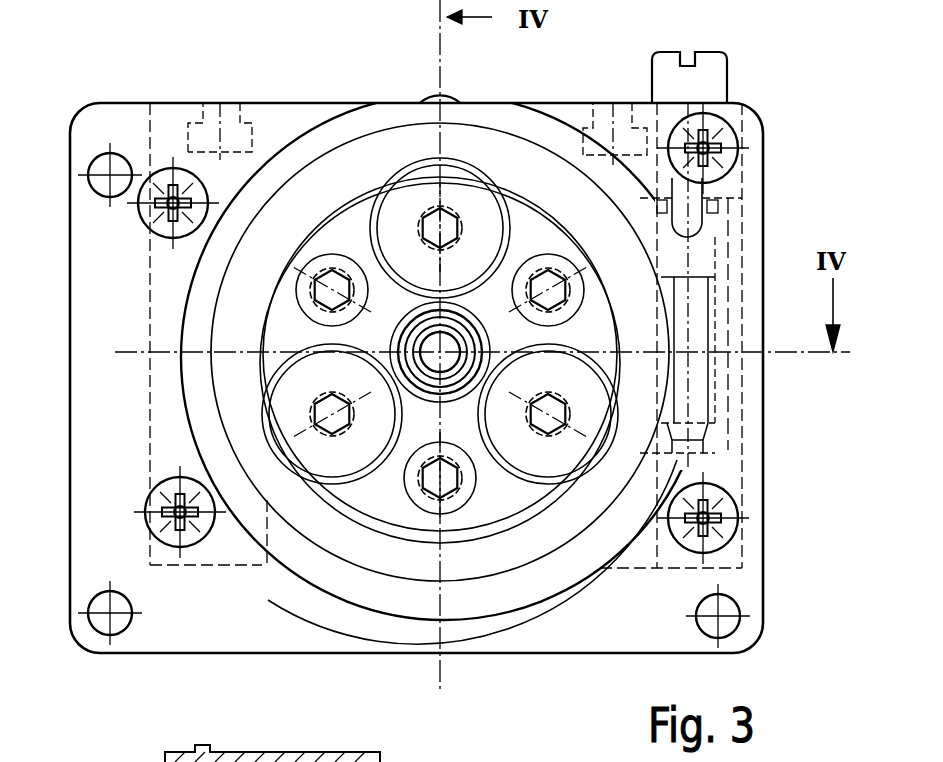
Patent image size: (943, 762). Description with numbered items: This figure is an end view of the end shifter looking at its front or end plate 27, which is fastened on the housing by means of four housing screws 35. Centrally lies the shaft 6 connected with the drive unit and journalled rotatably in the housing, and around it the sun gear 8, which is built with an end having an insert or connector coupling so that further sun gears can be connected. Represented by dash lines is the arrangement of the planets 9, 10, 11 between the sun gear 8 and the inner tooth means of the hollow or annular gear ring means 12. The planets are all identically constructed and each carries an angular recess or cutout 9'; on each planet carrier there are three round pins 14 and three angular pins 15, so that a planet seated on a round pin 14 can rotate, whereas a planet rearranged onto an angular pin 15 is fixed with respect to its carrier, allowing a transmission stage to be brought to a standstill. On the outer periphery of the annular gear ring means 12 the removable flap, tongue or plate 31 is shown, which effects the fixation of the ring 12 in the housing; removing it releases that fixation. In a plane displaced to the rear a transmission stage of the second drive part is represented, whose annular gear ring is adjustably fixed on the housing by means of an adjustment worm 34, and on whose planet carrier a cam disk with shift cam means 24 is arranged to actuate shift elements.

The shaft 6 is at (443, 397).
The sun gear 8 is at (556, 332).
The planet 9 is at (440, 321).
The angular recess 9' is at (433, 323).
The planet 10 is at (312, 495).
The planet 11 is at (592, 520).
The annular gear ring means 12 is at (318, 168).
The round pin 14 is at (390, 223).
The angular pin 15 is at (300, 263).
The shift cam means 24 is at (432, 101).
The end plate 27 is at (215, 633).
The removable plate 31 is at (247, 183).
The adjustment worm 34 is at (710, 92).
The housing screw 35 is at (737, 518).